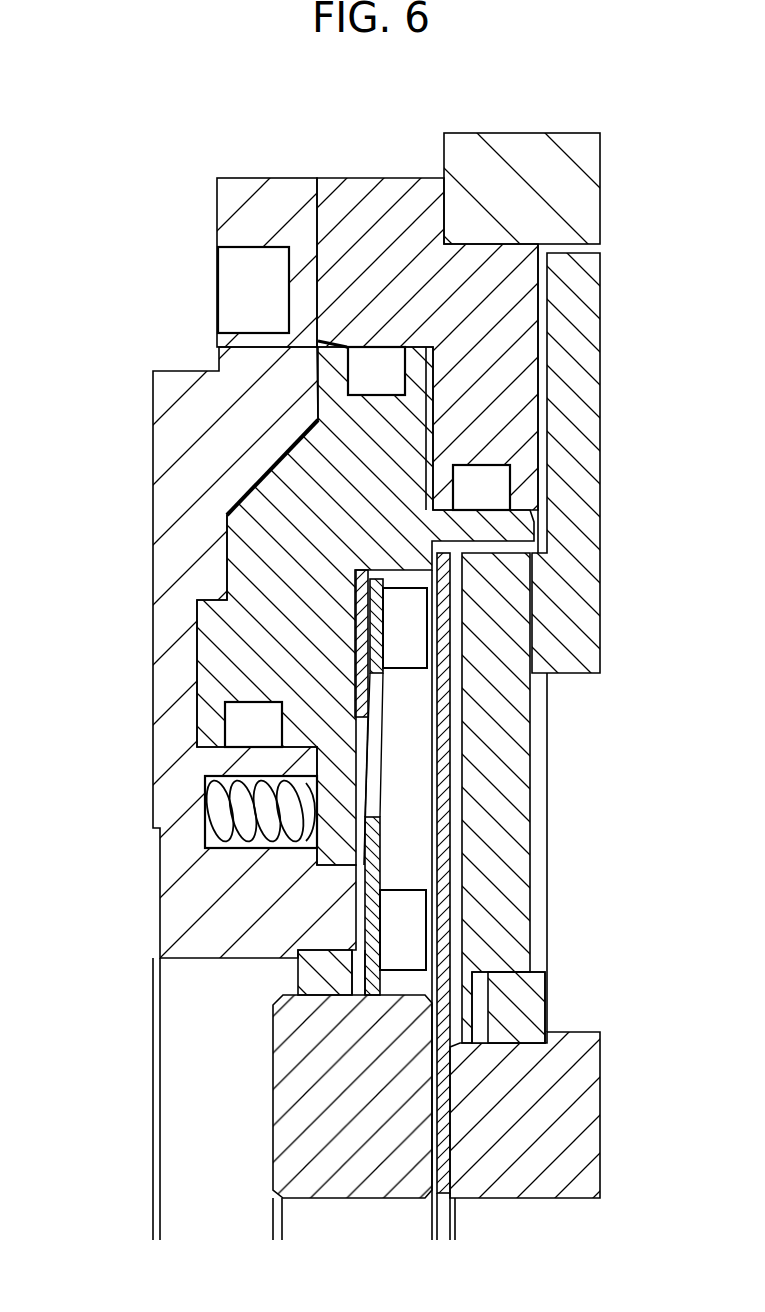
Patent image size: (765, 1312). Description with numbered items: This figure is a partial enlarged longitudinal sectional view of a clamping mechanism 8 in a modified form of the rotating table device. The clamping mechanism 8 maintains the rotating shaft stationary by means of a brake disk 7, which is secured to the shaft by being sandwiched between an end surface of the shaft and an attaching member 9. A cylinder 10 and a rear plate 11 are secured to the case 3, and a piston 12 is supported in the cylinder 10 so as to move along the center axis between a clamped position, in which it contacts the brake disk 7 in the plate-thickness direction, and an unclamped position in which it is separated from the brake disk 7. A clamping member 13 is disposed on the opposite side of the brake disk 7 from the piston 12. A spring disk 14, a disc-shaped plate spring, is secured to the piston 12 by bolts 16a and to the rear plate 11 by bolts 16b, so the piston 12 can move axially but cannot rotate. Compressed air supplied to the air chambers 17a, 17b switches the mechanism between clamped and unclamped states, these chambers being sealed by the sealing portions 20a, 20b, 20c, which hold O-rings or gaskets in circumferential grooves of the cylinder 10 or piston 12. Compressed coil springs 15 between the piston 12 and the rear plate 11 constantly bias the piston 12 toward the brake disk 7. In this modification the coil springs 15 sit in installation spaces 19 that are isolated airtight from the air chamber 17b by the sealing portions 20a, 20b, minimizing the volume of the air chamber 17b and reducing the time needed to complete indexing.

The case 3 is at (512, 152).
The brake disk 7 is at (443, 833).
The clamping mechanism 8 is at (138, 417).
The attaching member 9 is at (285, 1064).
The cylinder 10 is at (386, 192).
The rear plate 11 is at (270, 192).
The piston 12 is at (240, 569).
The clamping member 13 is at (515, 772).
The spring disk 14 is at (362, 672).
The coil springs 15 is at (223, 810).
The bolts 16a is at (408, 626).
The bolts 16b is at (417, 923).
The air chamber 17a is at (430, 429).
The air chamber 17b is at (323, 352).
The installation spaces 19 is at (257, 781).
The sealing portion 20a is at (388, 372).
The sealing portion 20b is at (243, 723).
The sealing portion 20c is at (493, 486).